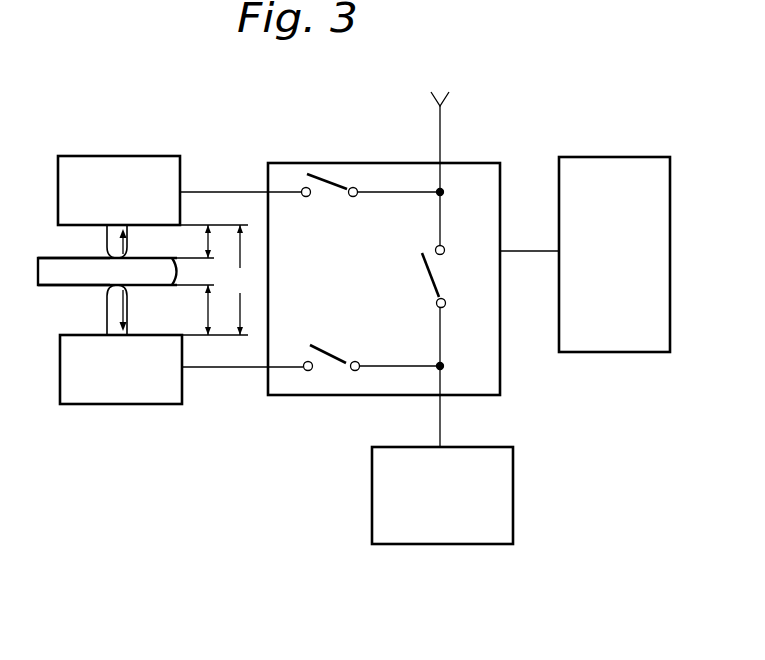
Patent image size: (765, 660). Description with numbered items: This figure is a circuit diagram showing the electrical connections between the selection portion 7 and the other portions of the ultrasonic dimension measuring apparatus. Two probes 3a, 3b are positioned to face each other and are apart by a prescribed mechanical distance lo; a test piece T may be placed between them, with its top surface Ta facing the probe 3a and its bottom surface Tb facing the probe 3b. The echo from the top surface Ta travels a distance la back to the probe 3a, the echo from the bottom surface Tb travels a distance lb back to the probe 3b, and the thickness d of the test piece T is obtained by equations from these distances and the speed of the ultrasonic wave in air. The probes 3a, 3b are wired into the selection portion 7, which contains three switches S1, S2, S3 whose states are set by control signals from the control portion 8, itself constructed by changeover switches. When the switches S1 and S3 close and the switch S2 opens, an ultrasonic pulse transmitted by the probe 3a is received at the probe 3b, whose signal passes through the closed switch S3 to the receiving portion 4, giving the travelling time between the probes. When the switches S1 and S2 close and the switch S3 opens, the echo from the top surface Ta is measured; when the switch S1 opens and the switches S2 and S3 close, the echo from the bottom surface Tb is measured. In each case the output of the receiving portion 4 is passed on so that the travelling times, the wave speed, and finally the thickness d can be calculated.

The probe 3a is at (129, 156).
The probe 3b is at (118, 405).
The test piece T is at (88, 277).
The top surface Ta is at (53, 259).
The bottom surface Tb is at (53, 287).
The travelling distance la is at (194, 241).
The travelling distance lb is at (194, 310).
The mechanical distance lo is at (239, 280).
The thickness d is at (206, 272).
The selection portion 7 is at (503, 384).
The control portion 8 is at (625, 157).
The receiving portion 4 is at (513, 494).
The switch S1 is at (322, 195).
The switch S2 is at (437, 274).
The switch S3 is at (308, 348).